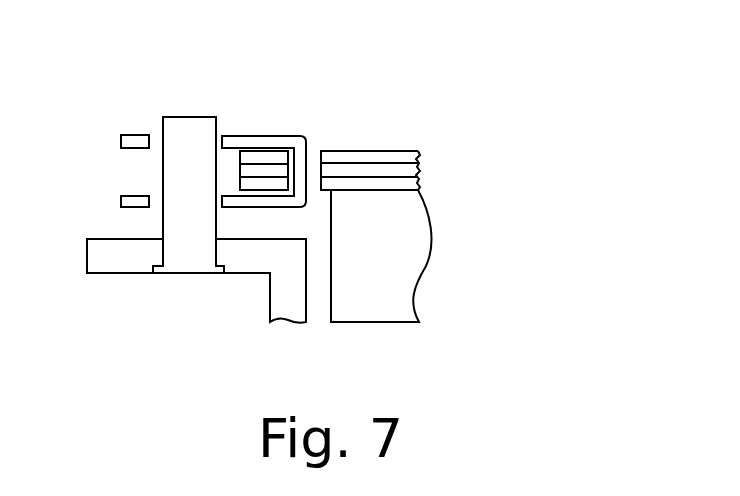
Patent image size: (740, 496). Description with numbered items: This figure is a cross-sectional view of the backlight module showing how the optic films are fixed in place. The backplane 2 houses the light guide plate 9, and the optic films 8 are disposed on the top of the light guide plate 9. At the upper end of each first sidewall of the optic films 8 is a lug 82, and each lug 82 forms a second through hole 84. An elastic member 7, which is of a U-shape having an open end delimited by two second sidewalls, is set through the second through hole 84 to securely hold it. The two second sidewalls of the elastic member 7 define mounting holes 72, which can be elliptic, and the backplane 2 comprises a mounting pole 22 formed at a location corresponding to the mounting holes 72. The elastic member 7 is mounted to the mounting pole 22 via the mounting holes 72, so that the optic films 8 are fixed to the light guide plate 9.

The backplane 2 is at (128, 257).
The mounting pole 22 is at (187, 188).
The mounting hole 72 is at (159, 140).
The elastic member 7 is at (245, 142).
The lug 82 is at (265, 163).
The second through hole 84 is at (312, 162).
The optic films 8 is at (370, 177).
The light guide plate 9 is at (368, 246).